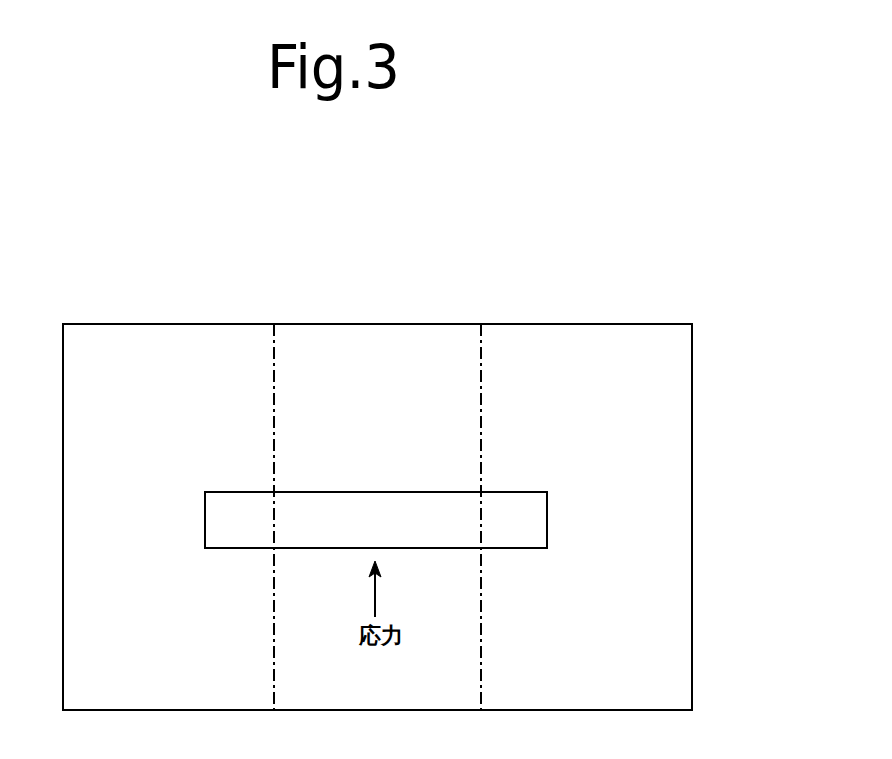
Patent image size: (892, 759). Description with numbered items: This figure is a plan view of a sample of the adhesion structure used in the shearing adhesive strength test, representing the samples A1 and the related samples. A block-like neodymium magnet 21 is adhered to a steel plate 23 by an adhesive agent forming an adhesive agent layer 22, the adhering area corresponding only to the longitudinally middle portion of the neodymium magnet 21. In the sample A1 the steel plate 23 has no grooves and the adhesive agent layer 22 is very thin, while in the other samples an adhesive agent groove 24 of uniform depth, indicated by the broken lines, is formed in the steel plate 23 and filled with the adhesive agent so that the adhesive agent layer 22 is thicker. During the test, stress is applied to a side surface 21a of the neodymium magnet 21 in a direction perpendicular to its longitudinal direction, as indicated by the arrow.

The neodymium magnet 21 is at (518, 494).
The side surface of the neodymium magnet 21a is at (520, 549).
The adhesive agent layer 22 is at (373, 507).
The steel plate 23 is at (682, 403).
The adhesive agent groove 24 is at (276, 347).
The sample A1 is at (422, 448).